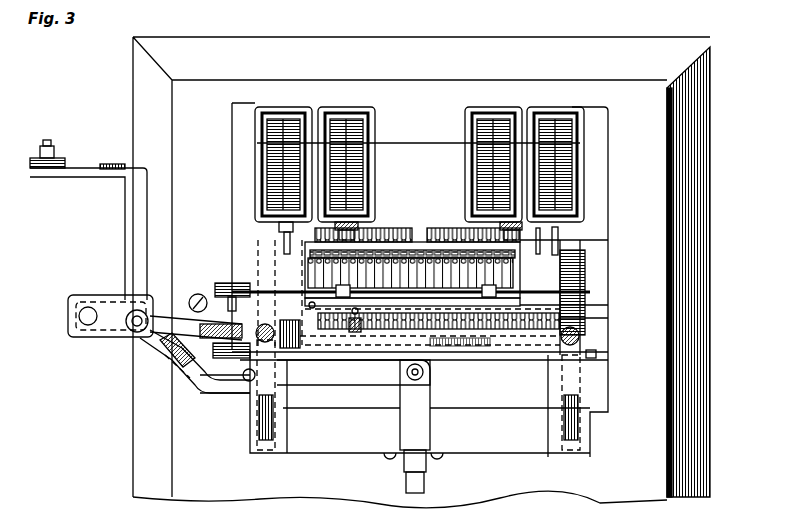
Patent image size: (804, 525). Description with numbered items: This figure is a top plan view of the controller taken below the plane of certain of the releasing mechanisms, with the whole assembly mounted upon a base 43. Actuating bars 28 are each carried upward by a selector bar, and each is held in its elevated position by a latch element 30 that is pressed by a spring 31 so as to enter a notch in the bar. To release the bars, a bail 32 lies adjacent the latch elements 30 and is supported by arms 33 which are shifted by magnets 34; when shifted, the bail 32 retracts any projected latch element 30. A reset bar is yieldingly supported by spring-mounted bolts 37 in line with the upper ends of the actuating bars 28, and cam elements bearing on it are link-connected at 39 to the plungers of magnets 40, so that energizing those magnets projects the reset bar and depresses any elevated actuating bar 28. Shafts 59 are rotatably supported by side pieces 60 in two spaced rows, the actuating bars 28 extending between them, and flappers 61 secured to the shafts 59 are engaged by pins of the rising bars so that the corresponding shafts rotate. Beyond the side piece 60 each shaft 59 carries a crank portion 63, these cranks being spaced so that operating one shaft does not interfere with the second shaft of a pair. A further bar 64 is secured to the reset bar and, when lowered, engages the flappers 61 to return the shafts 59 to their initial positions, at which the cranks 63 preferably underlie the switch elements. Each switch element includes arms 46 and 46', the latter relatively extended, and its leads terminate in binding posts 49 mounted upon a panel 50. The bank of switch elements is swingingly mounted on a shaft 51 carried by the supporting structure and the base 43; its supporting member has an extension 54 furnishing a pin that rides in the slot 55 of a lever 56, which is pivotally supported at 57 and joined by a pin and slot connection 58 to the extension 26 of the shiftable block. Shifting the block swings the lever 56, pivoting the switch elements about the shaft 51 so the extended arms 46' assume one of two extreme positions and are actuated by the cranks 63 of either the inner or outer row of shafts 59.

The extension 26 is at (405, 405).
The actuating bar 28 is at (490, 345).
The latch element 30 is at (500, 272).
The spring 31 is at (375, 250).
The bail 32 is at (590, 300).
The arm 33 is at (575, 285).
The magnet 34 is at (480, 168).
The spring-mounted bolt 37 is at (590, 338).
The link connection 39 is at (560, 247).
The magnet 40 is at (575, 176).
The base 43 is at (668, 436).
The arm 46 is at (174, 373).
The extended arm 46' is at (164, 385).
The binding post 49 is at (46, 146).
The panel 50 is at (66, 162).
The shaft 51 is at (80, 317).
The extension 54 is at (135, 327).
The slot 55 is at (492, 280).
The lever 56 is at (222, 393).
The pivot 57 is at (248, 382).
The pin and slot connection 58 is at (405, 376).
The shaft 59 is at (596, 356).
The side piece 60 is at (573, 385).
The flapper 61 is at (515, 355).
The crank portion 63 is at (200, 380).
The bar 64 is at (360, 332).